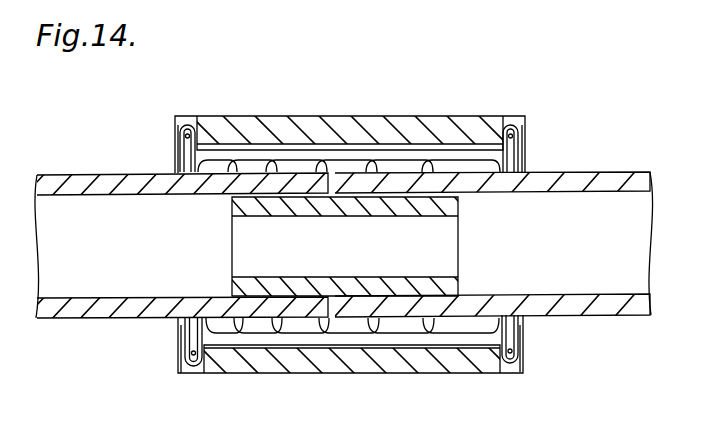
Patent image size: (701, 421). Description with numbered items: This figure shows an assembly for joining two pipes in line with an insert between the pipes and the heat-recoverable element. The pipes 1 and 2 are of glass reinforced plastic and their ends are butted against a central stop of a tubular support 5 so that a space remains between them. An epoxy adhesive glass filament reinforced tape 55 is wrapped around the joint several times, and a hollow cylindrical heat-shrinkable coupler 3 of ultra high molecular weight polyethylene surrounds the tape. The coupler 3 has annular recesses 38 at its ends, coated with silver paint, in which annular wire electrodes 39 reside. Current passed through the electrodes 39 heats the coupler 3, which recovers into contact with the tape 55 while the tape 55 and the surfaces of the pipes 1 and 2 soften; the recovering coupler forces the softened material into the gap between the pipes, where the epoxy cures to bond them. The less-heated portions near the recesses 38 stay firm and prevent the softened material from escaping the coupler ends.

The pipe 1 is at (84, 178).
The pipe 2 is at (566, 178).
The coupler 3 is at (287, 116).
The tubular support 5 is at (335, 199).
The annular recesses 38 is at (512, 118).
The annular wire electrodes 39 is at (189, 123).
The epoxy adhesive glass filament reinforced tape 55 is at (253, 166).